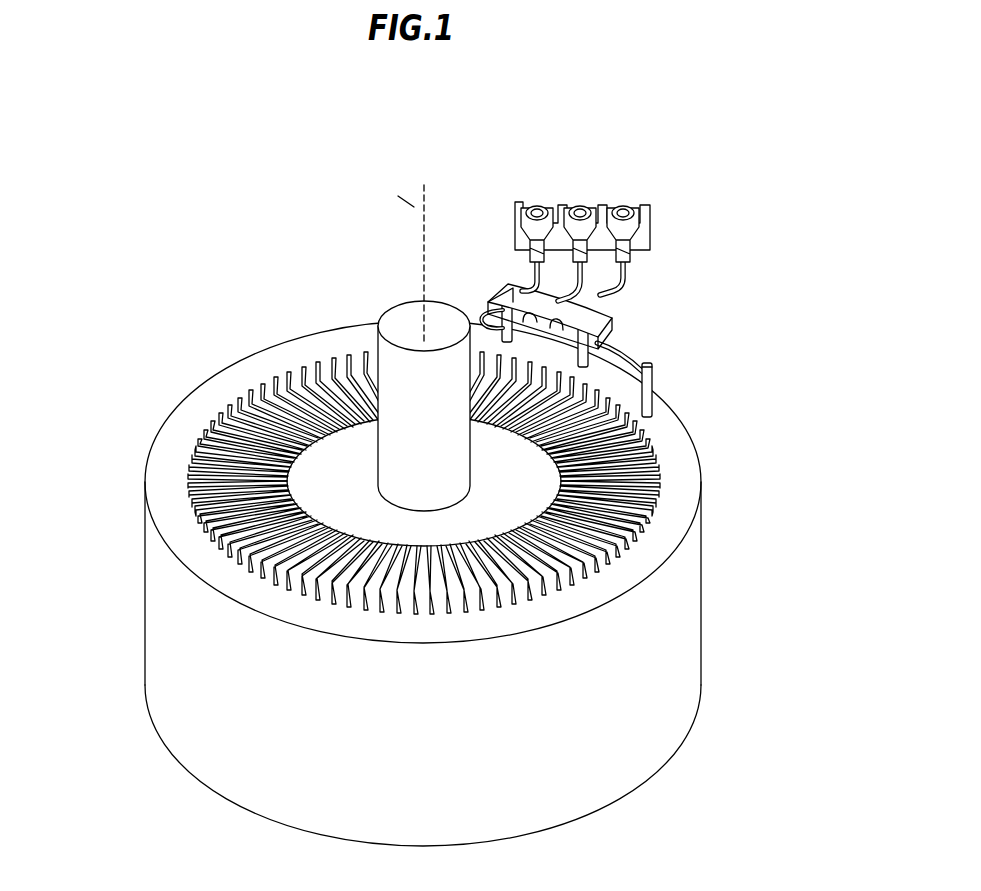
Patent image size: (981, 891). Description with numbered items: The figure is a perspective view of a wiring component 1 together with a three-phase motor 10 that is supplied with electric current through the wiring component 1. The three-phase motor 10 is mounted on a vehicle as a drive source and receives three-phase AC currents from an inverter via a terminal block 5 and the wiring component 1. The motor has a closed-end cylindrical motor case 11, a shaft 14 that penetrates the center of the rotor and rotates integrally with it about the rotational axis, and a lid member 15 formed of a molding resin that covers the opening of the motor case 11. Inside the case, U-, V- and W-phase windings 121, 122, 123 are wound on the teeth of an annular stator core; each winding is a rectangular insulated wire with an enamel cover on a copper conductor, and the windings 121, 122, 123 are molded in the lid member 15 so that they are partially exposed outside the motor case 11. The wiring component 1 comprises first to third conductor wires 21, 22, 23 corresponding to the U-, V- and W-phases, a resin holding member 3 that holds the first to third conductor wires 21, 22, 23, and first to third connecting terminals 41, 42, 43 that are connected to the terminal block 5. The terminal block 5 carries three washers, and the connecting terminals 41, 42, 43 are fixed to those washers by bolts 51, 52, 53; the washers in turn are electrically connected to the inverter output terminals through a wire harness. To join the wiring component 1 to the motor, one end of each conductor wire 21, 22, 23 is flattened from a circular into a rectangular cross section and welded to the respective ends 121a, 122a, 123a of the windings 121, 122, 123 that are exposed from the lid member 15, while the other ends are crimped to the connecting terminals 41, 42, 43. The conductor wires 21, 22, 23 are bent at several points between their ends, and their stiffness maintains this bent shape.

The wiring component 1 is at (589, 241).
The resin holding member 3 is at (486, 303).
The terminal block 5 is at (650, 238).
The three-phase motor 10 is at (425, 489).
The motor case 11 is at (145, 600).
The shaft 14 is at (400, 318).
The lid member 15 is at (687, 475).
The first conductor wire 21 is at (627, 278).
The second conductor wire 22 is at (586, 281).
The third conductor wire 23 is at (533, 278).
The first connecting terminal 41 is at (637, 212).
The second connecting terminal 42 is at (592, 212).
The third connecting terminal 43 is at (547, 212).
The bolt 51 is at (622, 206).
The bolt 52 is at (579, 206).
The bolt 53 is at (537, 206).
The U-phase winding 121 is at (303, 363).
The V-phase winding 122 is at (245, 393).
The W-phase winding 123 is at (192, 452).
The end of U-phase winding 121a is at (653, 397).
The end of V-phase winding 122a is at (606, 348).
The end of W-phase winding 123a is at (503, 290).